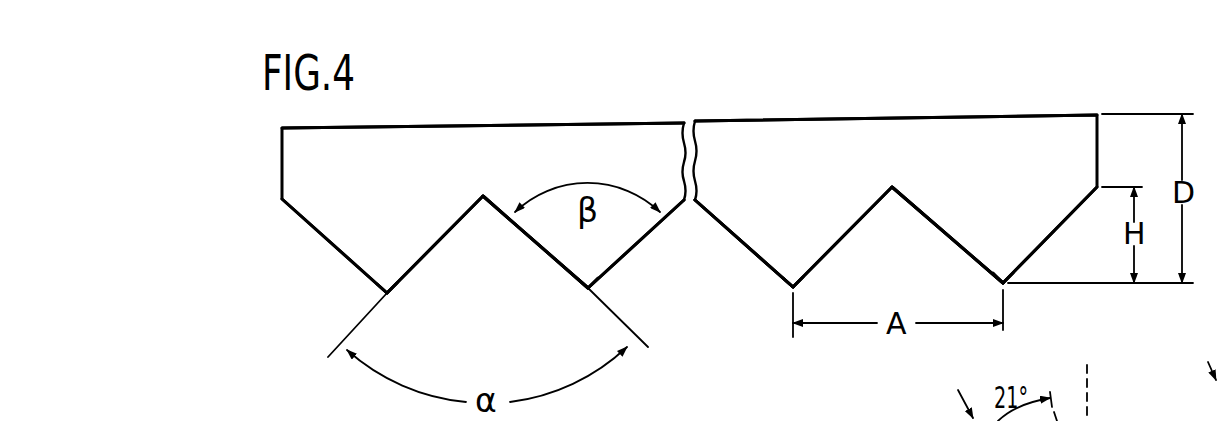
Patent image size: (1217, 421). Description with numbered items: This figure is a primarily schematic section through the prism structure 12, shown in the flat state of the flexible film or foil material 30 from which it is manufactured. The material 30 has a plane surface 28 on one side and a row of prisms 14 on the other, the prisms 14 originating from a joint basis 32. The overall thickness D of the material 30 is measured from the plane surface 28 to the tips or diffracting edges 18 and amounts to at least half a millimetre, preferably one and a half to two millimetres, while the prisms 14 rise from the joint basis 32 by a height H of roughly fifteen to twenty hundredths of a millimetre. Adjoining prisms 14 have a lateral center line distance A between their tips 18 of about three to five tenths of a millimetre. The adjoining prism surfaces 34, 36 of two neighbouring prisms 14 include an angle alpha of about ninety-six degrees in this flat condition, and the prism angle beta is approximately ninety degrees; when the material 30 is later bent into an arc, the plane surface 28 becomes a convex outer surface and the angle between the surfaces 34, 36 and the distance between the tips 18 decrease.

The prism structure 12 is at (294, 228).
The prisms 14 is at (355, 246).
The tips or diffracting edges 18 is at (388, 297).
The plane surface 28 is at (557, 123).
The film or foil material 30 is at (830, 107).
The joint basis 32 is at (468, 143).
The prism surface 34 is at (372, 280).
The prism surface 36 is at (523, 235).